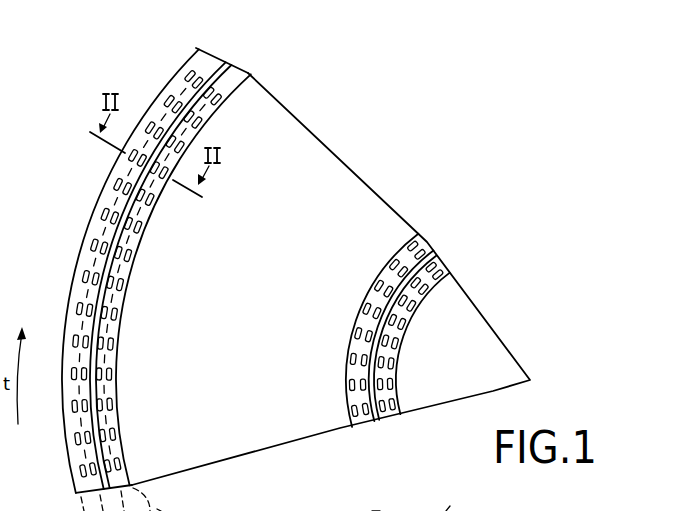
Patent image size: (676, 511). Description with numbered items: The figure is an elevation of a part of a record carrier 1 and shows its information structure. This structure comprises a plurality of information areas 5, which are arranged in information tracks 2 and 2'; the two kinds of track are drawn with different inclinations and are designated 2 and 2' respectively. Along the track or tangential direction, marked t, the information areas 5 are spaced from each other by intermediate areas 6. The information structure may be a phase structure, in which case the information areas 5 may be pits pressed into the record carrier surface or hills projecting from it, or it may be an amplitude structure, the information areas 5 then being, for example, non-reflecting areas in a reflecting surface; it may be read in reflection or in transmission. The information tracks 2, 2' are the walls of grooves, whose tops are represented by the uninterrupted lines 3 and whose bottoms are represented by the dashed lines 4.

The record carrier 1 is at (348, 160).
The information track 2 is at (257, 258).
The information track 2' is at (287, 255).
The tops of grooves 3 is at (378, 501).
The bottoms of grooves 4 is at (455, 501).
The information areas 5 is at (115, 183).
The intermediate areas 6 is at (82, 293).